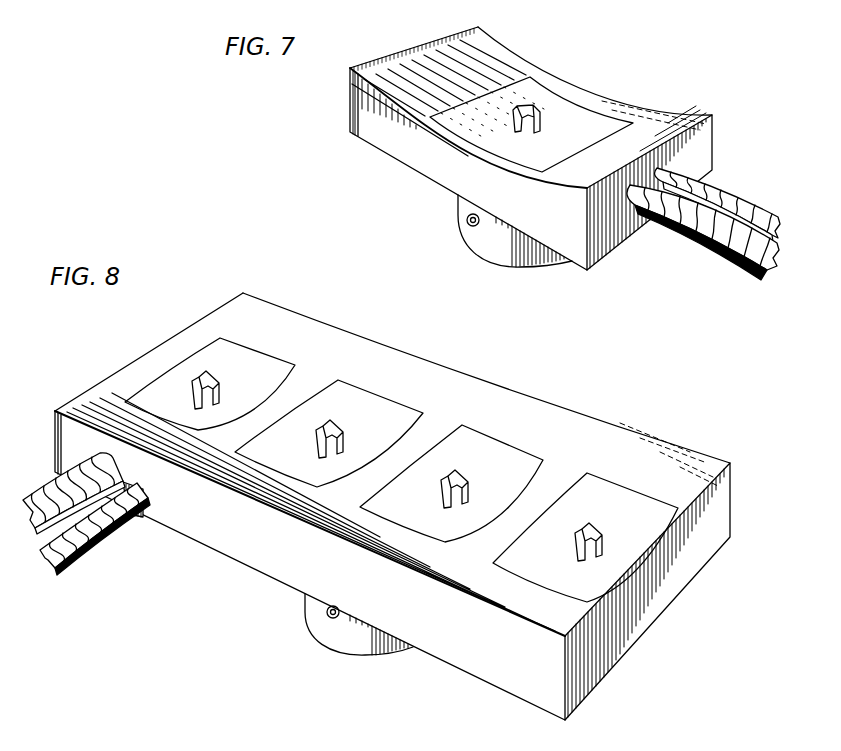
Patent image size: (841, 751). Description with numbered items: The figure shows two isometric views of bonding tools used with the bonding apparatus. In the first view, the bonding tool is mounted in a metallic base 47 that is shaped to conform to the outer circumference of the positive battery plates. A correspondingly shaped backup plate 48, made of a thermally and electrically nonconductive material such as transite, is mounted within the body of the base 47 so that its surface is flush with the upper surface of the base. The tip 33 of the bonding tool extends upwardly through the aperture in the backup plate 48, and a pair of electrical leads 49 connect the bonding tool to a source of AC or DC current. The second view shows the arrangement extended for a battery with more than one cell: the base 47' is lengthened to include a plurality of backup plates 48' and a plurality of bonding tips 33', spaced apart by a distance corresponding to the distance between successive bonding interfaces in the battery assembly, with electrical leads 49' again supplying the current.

In FIG. 7, the metallic base 47 is at (531, 143).
In FIG. 7, the backup plate 48 is at (531, 114).
In FIG. 7, the tip 33 is at (552, 123).
In FIG. 7, the electrical leads 49 is at (714, 221).
In FIG. 8, the metallic base 47' is at (415, 506).
In FIG. 8, the backup plates 48' is at (401, 470).
In FIG. 8, the bonding tips 33' is at (397, 466).
In FIG. 8, the electrical leads 49' is at (86, 514).